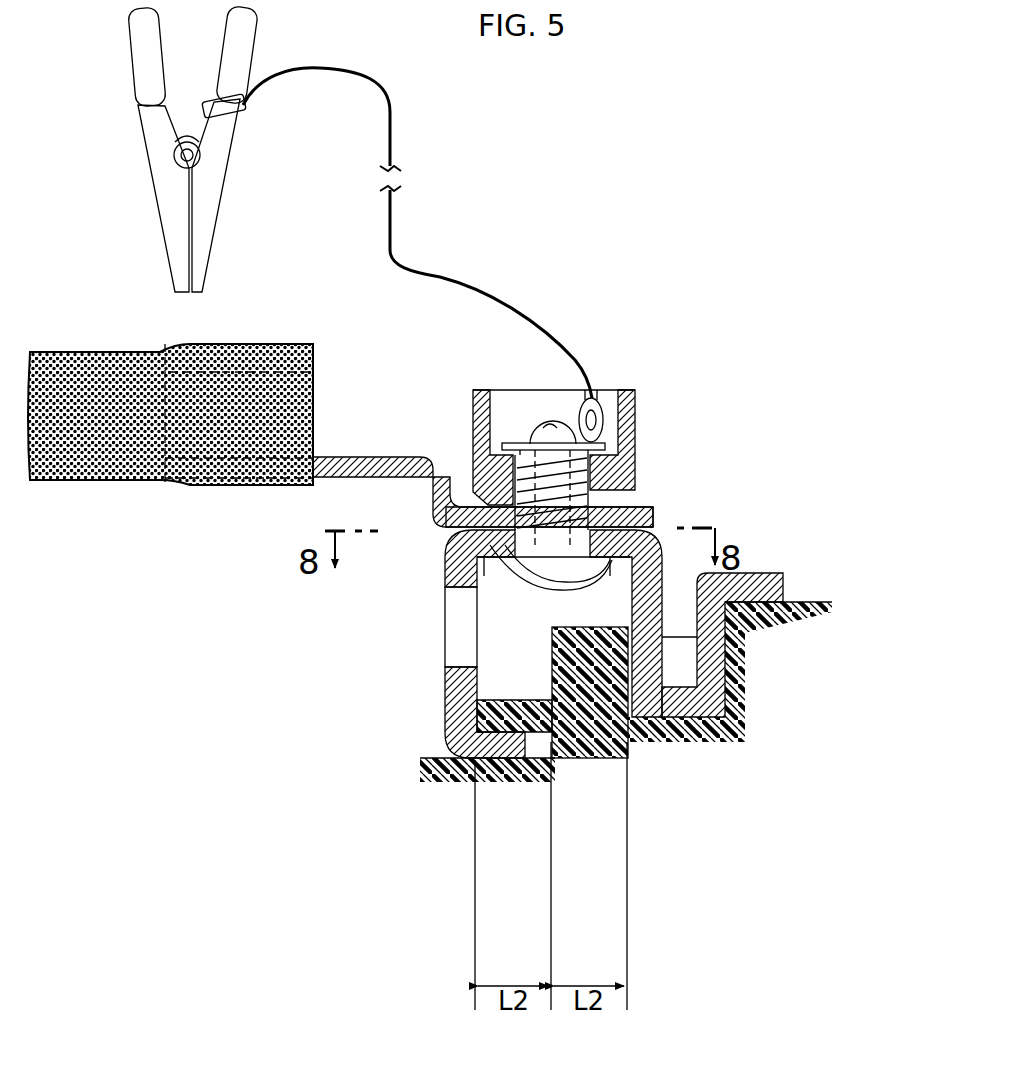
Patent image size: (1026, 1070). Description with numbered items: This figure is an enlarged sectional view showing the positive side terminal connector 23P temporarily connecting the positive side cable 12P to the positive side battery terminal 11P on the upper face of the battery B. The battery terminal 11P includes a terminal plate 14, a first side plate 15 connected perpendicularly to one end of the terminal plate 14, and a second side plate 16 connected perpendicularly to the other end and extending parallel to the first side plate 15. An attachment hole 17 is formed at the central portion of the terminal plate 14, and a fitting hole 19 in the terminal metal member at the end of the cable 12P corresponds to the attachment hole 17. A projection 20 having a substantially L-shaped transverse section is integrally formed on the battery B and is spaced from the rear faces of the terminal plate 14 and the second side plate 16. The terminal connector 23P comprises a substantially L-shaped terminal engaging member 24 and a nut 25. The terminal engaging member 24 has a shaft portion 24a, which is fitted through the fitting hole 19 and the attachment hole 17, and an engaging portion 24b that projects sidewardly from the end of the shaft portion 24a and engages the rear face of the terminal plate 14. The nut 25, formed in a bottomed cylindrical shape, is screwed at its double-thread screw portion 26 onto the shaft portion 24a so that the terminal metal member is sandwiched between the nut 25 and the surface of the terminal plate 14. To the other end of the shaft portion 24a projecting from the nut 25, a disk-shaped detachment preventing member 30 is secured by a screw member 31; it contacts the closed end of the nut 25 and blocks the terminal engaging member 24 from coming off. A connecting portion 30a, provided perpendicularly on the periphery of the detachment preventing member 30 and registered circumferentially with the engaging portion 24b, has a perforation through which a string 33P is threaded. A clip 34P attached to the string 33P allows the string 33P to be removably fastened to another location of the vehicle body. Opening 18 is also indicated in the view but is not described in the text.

The clip 34P is at (210, 178).
The string 33P is at (437, 277).
The positive side cable 12P is at (140, 475).
The terminal engaging member 24 is at (563, 476).
The shaft portion 24a is at (618, 448).
The engaging portion 24b is at (599, 513).
The positive side terminal connector 23P is at (532, 382).
The nut 25 is at (473, 418).
The screw member 31 is at (540, 430).
The double-thread screw portion 26 is at (515, 468).
The detachment preventing member 30 is at (634, 361).
The connecting portion 30a is at (618, 430).
The positive side battery terminal 11P is at (538, 663).
The terminal plate 14 is at (438, 598).
The opening 18 is at (477, 590).
The second side plate 16 is at (452, 694).
The projection 20 is at (560, 660).
The first side plate 15 is at (728, 640).
The fitting hole 19 is at (462, 546).
The attachment hole 17 is at (526, 562).
The battery B is at (826, 594).